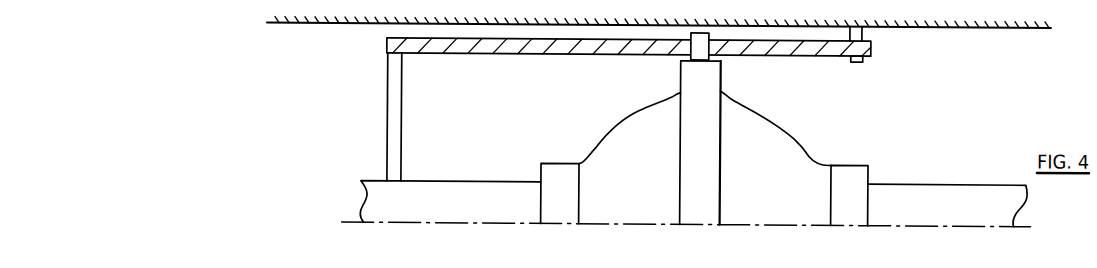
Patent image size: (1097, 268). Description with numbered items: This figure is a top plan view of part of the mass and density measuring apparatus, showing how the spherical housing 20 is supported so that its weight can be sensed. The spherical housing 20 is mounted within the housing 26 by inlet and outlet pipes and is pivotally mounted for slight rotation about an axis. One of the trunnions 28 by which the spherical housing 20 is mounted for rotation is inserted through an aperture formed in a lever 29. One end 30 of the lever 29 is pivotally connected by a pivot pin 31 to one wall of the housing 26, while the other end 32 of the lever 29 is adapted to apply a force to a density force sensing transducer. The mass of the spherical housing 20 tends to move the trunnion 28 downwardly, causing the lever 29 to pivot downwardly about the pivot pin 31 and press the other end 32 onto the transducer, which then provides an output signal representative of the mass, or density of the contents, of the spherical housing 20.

The spherical housing 20 is at (796, 115).
The housing 26 is at (977, 23).
The trunnion 28 is at (702, 49).
The lever 29 is at (791, 53).
The end of the lever 30 is at (883, 49).
The pivot pin 31 is at (858, 59).
The other end of the lever 32 is at (388, 49).